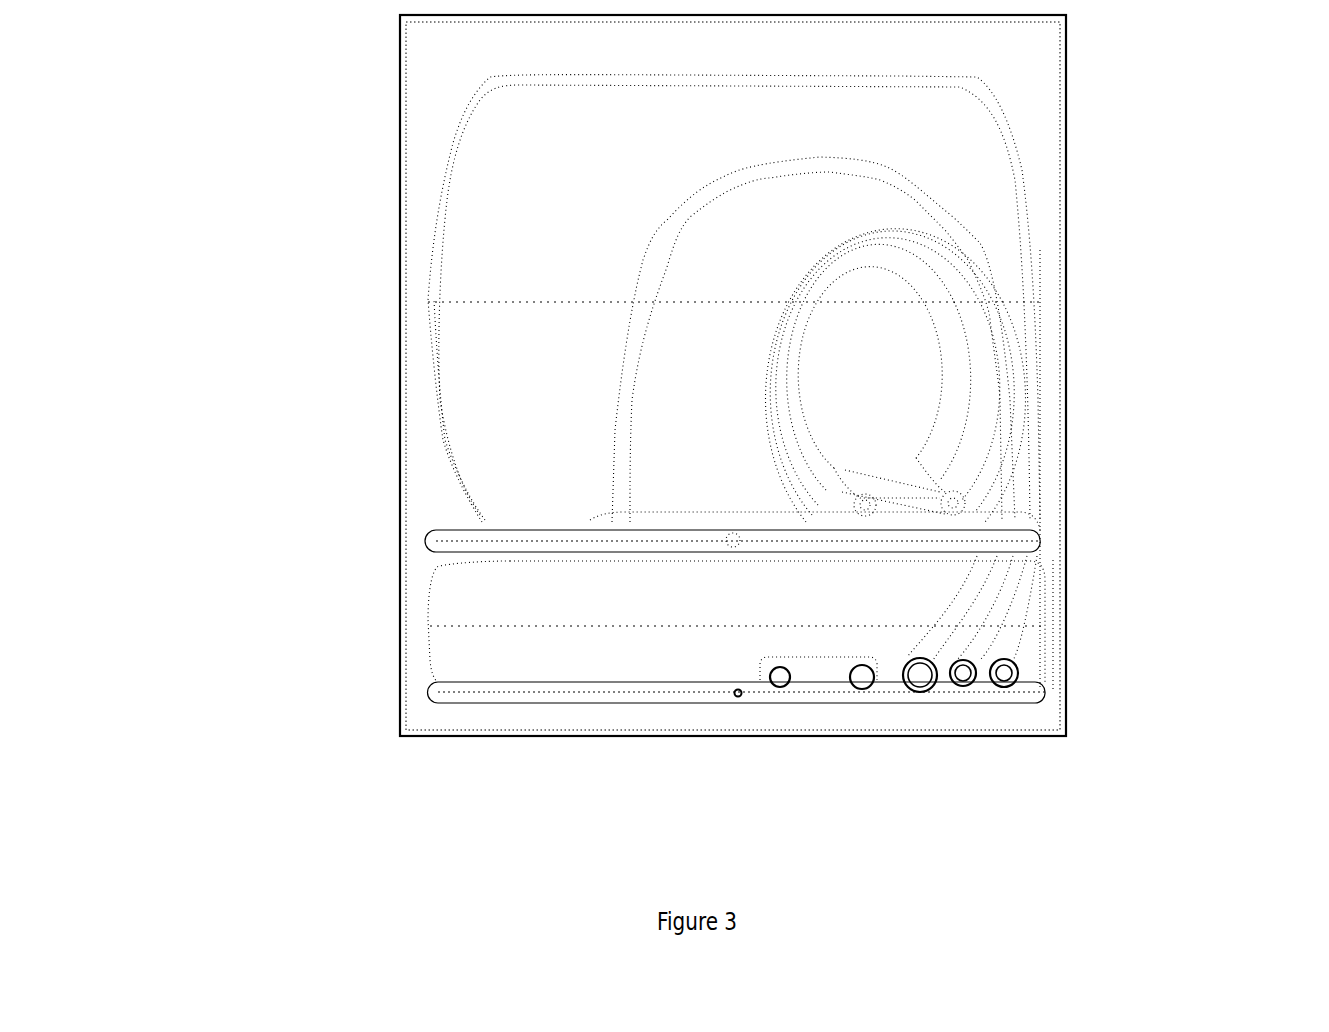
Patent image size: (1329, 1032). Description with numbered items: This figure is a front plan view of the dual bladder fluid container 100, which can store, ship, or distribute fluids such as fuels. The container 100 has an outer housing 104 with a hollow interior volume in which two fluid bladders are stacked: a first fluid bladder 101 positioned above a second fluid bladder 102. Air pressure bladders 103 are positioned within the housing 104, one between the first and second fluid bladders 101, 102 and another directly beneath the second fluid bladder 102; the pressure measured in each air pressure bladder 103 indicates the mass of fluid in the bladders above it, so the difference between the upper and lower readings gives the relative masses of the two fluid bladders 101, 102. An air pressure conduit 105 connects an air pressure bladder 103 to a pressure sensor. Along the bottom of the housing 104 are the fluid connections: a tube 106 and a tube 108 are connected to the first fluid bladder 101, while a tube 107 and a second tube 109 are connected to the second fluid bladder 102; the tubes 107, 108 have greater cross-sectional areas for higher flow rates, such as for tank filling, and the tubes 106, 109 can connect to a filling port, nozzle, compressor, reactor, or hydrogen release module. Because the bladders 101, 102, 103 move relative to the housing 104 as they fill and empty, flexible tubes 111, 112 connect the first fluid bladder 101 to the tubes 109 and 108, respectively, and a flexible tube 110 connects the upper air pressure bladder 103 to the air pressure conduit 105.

The fluid container 100 is at (1292, 597).
The first fluid bladder 101 is at (462, 272).
The second fluid bladder 102 is at (458, 604).
The air pressure bladder 103 is at (442, 540).
The outer housing 104 is at (430, 117).
The air pressure conduit 105 is at (736, 696).
The tube 106 is at (779, 687).
The tube 107 is at (858, 689).
The tube 108 is at (915, 692).
The second tube 109 is at (1008, 688).
The flexible tube 110 is at (905, 178).
The flexible tube 111 is at (790, 477).
The flexible tube 112 is at (880, 466).